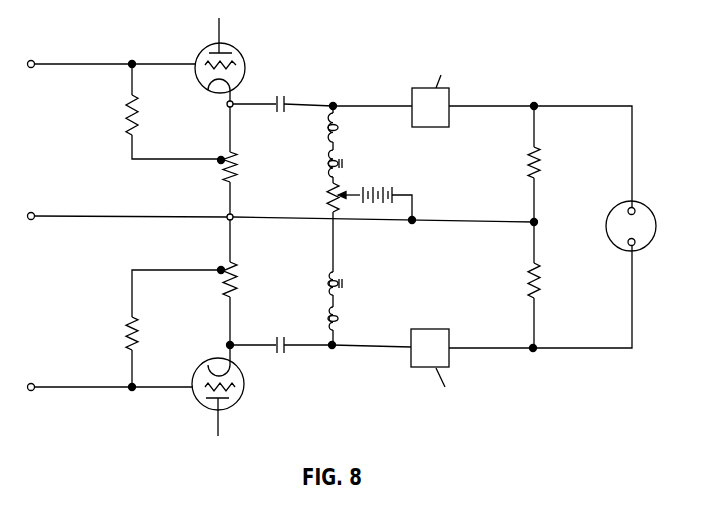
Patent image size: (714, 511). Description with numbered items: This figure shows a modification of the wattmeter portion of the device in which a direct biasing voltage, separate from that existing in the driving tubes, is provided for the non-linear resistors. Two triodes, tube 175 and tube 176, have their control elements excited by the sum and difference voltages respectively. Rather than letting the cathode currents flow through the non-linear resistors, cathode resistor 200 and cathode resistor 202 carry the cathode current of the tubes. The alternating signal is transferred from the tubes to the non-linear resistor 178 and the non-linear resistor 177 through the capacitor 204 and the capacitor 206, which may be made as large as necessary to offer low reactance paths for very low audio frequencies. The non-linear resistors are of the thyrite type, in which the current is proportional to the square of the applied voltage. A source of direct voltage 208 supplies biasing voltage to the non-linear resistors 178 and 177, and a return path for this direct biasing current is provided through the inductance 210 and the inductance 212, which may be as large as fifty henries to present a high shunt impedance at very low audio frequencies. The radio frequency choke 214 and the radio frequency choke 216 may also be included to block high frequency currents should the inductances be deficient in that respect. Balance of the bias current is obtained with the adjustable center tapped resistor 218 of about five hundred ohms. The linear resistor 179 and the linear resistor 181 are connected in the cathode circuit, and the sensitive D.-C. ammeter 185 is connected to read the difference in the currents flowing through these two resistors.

The tube 175 is at (236, 50).
The tube 176 is at (232, 405).
The non-linear resistor 177 is at (450, 360).
The non-linear resistor 178 is at (449, 97).
The linear resistor 179 is at (541, 159).
The linear resistor 181 is at (541, 277).
The D.-C. ammeter 185 is at (649, 210).
The cathode resistor 200 is at (238, 166).
The cathode resistor 202 is at (239, 279).
The capacitor 204 is at (283, 100).
The capacitor 206 is at (285, 353).
The source of direct voltage 208 is at (394, 191).
The inductance 210 is at (345, 158).
The inductance 212 is at (341, 283).
The radio frequency choke 214 is at (339, 129).
The radio frequency choke 216 is at (339, 322).
The center tapped resistor 218 is at (327, 190).